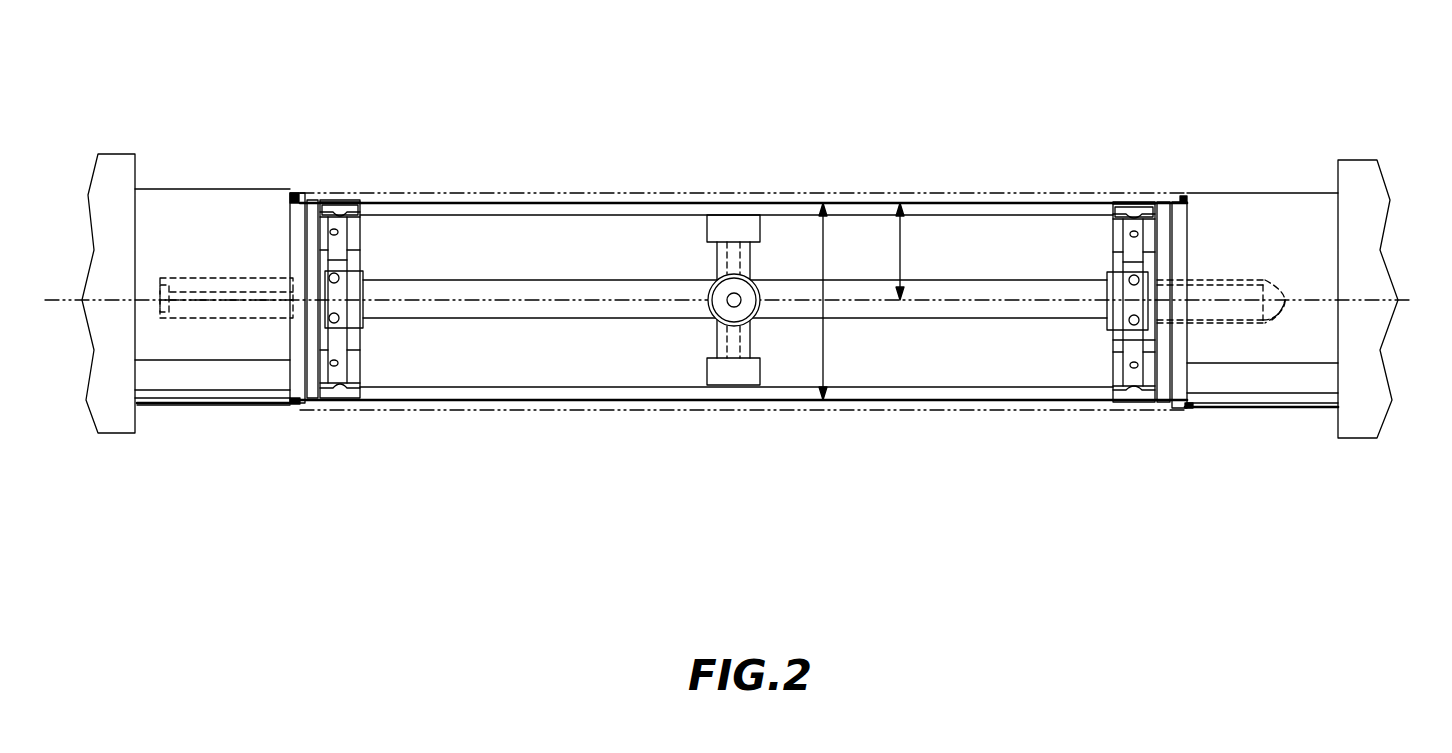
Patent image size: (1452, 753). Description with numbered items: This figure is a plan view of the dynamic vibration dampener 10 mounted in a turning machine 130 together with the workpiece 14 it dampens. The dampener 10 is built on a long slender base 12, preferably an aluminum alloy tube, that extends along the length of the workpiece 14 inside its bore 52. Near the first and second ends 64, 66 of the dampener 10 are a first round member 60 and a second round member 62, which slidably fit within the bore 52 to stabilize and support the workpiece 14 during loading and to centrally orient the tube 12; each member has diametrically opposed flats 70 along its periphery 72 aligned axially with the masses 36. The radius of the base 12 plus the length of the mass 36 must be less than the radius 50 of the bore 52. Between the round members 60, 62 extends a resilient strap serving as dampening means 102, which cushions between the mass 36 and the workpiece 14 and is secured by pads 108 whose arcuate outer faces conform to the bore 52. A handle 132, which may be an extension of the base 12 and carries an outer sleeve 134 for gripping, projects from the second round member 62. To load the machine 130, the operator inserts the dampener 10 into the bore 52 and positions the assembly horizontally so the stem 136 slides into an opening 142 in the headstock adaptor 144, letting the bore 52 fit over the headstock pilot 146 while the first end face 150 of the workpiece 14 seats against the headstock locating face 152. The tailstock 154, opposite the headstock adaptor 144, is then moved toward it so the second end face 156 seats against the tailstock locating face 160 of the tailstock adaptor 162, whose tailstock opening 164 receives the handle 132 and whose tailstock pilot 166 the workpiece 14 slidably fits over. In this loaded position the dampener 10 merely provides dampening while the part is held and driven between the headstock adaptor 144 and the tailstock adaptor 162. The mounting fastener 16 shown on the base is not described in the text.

The dynamic vibration dampener 10 is at (845, 531).
The base 12 is at (560, 322).
The workpiece 14 is at (968, 193).
The pin 16 is at (712, 262).
The mass 36 is at (750, 222).
The radius of bore 50 is at (905, 244).
The bore 52 is at (825, 362).
The first round member 60 is at (366, 360).
The second round member 62 is at (1111, 366).
The first end 64 is at (160, 276).
The second end 66 is at (1283, 285).
The flats 70 is at (358, 258).
The periphery 72 is at (358, 208).
The dampening means 102 is at (540, 196).
The pads 108 is at (338, 208).
The turning machine 130 is at (118, 174).
The handle 132 is at (1235, 328).
The outer sleeve 134 is at (1292, 315).
The stem 136 is at (195, 318).
The opening 142 is at (223, 304).
The headstock adaptor 144 is at (225, 225).
The headstock pilot 146 is at (297, 222).
The first end face 150 is at (277, 407).
The headstock locating face 152 is at (311, 198).
The tailstock 154 is at (1356, 430).
The second end face 156 is at (1185, 408).
The tailstock locating face 160 is at (1114, 358).
The tailstock adaptor 162 is at (1265, 230).
The tailstock opening 164 is at (1272, 325).
The tailstock pilot 166 is at (1187, 210).